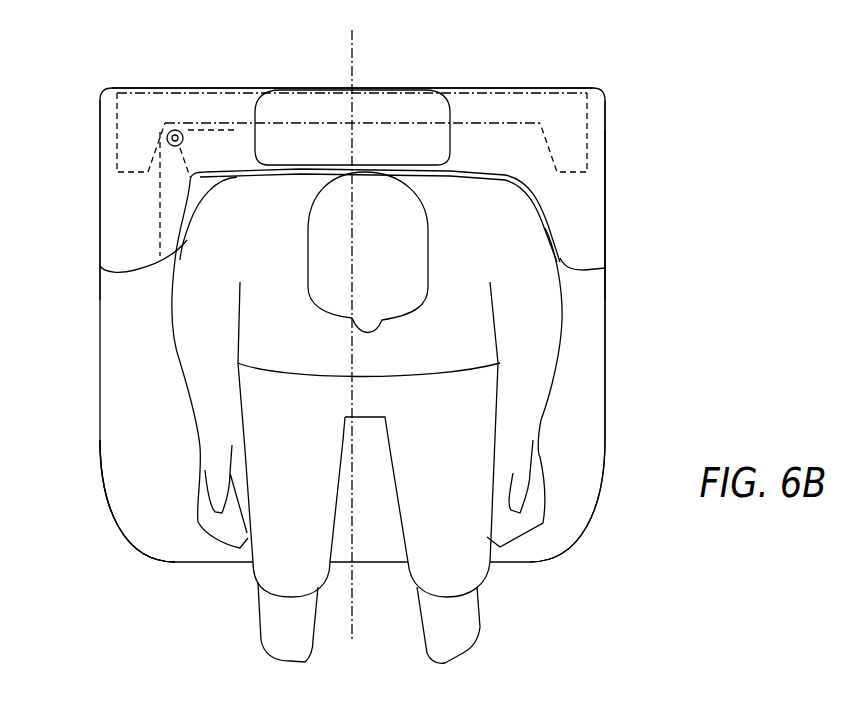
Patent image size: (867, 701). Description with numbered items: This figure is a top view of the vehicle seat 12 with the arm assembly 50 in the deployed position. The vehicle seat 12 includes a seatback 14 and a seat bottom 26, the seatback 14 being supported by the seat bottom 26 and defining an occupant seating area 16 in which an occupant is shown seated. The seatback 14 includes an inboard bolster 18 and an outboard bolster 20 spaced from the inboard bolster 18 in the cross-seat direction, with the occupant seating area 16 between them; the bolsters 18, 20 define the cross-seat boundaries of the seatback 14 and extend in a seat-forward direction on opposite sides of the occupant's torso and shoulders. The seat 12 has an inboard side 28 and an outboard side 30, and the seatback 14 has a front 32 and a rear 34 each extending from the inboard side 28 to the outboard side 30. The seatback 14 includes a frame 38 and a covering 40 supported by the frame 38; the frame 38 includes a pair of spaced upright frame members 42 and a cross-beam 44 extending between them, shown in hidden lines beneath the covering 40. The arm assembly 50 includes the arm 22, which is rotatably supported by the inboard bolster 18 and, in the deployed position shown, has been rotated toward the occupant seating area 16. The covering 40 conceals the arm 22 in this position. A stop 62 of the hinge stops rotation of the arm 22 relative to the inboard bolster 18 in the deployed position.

The vehicle seat 12 is at (611, 193).
The seatback 14 is at (607, 130).
The occupant seating area 16 is at (584, 277).
The inboard bolster 18 is at (122, 262).
The outboard bolster 20 is at (583, 250).
The arm 22 is at (160, 233).
The seat bottom 26 is at (158, 537).
The inboard side 28 is at (99, 125).
The outboard side 30 is at (607, 162).
The front 32 is at (237, 177).
The rear 34 is at (170, 86).
The frame 38 is at (527, 88).
The covering 40 is at (188, 225).
The upright frame members 42 is at (117, 160).
The cross-beam 44 is at (233, 92).
The arm assembly 50 is at (153, 207).
The stop 62 is at (188, 140).